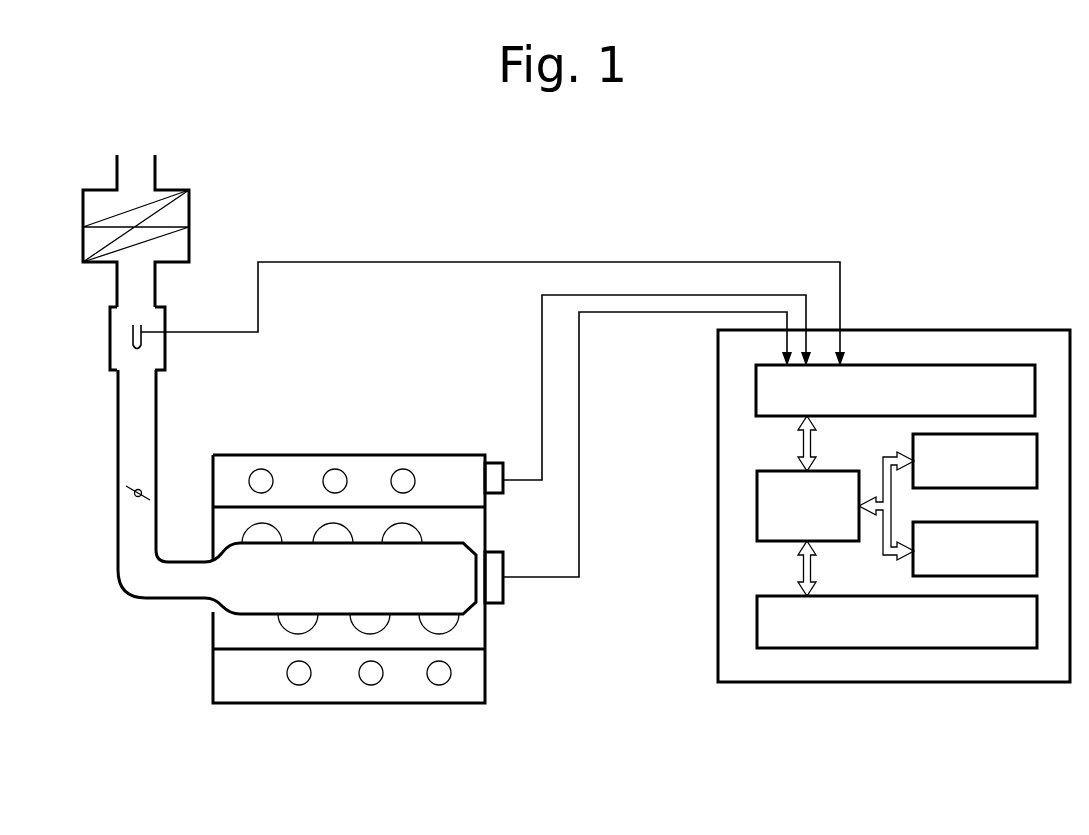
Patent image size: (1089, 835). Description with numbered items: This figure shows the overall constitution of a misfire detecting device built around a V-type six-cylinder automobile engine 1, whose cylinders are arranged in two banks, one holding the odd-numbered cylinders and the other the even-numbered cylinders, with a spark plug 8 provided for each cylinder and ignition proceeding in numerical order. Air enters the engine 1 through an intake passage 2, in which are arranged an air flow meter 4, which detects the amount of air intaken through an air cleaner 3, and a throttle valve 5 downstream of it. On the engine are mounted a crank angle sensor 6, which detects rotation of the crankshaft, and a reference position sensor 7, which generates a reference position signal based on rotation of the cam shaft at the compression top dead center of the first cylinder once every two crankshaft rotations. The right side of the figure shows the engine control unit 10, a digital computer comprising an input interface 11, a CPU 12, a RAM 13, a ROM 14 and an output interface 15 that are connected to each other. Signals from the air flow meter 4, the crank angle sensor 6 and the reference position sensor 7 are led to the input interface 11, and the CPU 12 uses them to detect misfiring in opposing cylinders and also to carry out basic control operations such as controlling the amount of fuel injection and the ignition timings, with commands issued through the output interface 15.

The V-type six-cylinder engine 1 is at (170, 640).
The intake passage 2 is at (118, 410).
The air cleaner 3 is at (189, 208).
The air flow meter 4 is at (133, 334).
The throttle valve 5 is at (127, 488).
The crank angle sensor 6 is at (503, 597).
The reference position sensor 7 is at (497, 463).
The spark plugs 8 is at (273, 483).
The engine control unit 10 is at (940, 330).
The input interface 11 is at (960, 365).
The CPU 12 is at (768, 471).
The RAM 13 is at (1037, 475).
The ROM 14 is at (1037, 560).
The output interface 15 is at (1037, 632).